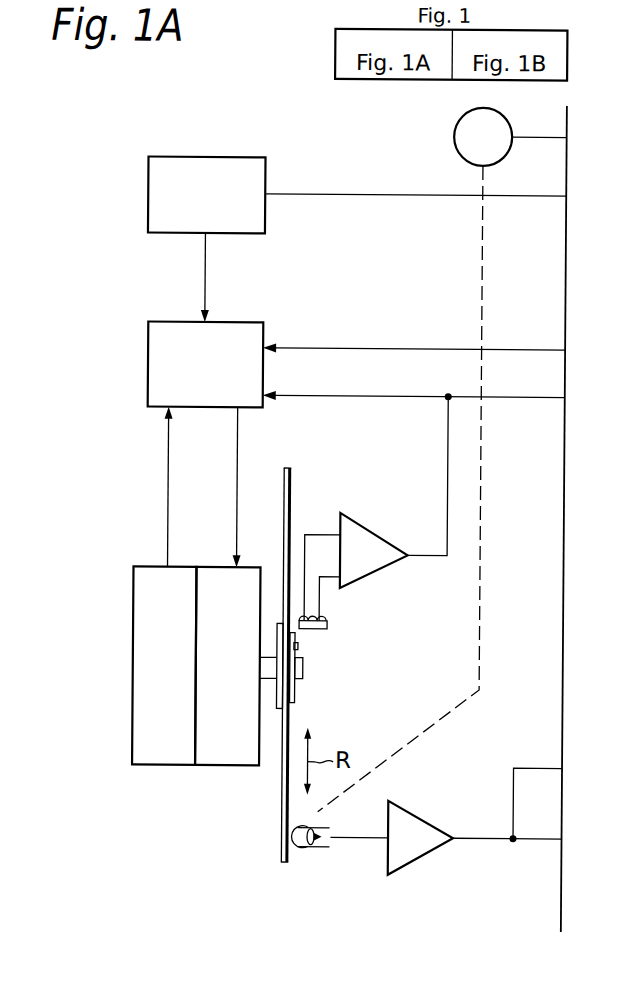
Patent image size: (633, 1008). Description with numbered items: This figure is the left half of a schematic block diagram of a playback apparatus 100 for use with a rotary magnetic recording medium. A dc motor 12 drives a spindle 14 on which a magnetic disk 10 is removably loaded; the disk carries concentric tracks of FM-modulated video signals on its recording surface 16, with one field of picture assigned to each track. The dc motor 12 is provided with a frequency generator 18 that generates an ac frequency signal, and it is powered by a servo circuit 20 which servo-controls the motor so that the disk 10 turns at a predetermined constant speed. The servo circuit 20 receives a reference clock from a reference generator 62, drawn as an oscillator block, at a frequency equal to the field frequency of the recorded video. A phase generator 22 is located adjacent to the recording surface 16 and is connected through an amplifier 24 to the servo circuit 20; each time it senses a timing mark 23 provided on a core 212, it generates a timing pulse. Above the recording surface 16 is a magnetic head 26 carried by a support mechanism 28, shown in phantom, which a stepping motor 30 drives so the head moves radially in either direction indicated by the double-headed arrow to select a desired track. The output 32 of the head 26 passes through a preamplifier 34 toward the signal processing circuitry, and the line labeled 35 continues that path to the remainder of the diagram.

The playback apparatus 100 is at (337, 145).
The stepping motor 30 is at (452, 137).
The support mechanism 28 is at (484, 513).
The reference generator 62 is at (184, 158).
The servo circuit 20 is at (226, 323).
The amplifier 24 is at (384, 541).
The frequency generator 18 is at (155, 766).
The dc motor 12 is at (232, 766).
The recording surface 16 is at (292, 492).
The magnetic disk 10 is at (283, 862).
The core 212 is at (296, 703).
The spindle 14 is at (304, 668).
The timing mark 23 is at (299, 645).
The phase generator 22 is at (328, 622).
The magnetic head 26 is at (313, 851).
The output of the head 32 is at (368, 839).
The preamplifier 34 is at (428, 858).
The output terminal 35 is at (500, 840).